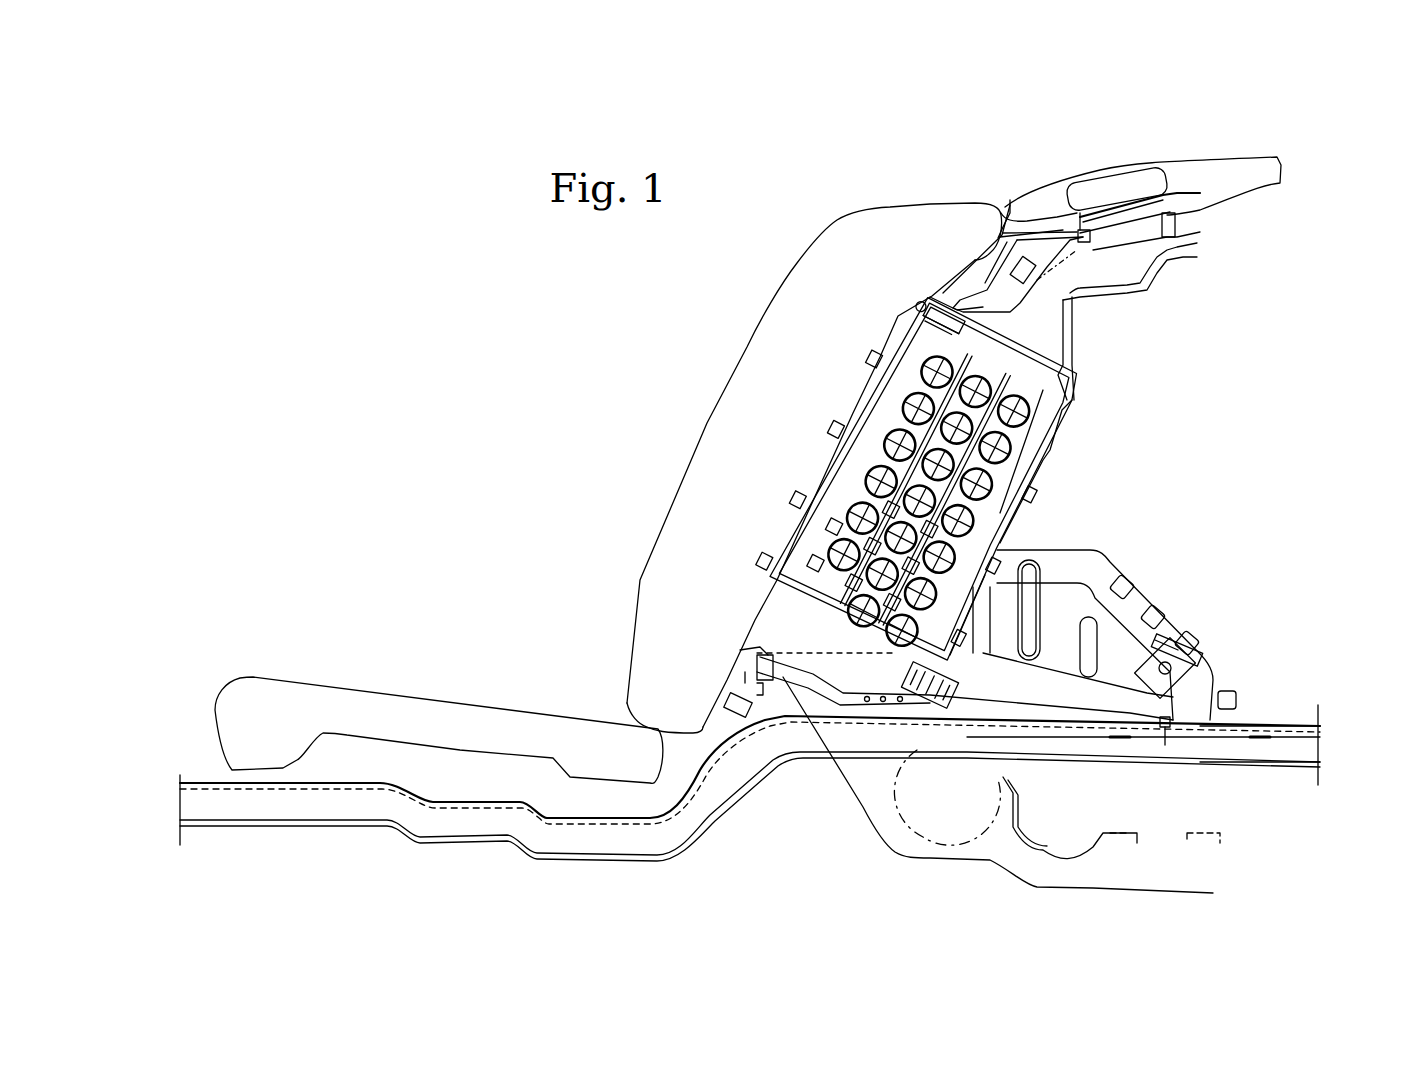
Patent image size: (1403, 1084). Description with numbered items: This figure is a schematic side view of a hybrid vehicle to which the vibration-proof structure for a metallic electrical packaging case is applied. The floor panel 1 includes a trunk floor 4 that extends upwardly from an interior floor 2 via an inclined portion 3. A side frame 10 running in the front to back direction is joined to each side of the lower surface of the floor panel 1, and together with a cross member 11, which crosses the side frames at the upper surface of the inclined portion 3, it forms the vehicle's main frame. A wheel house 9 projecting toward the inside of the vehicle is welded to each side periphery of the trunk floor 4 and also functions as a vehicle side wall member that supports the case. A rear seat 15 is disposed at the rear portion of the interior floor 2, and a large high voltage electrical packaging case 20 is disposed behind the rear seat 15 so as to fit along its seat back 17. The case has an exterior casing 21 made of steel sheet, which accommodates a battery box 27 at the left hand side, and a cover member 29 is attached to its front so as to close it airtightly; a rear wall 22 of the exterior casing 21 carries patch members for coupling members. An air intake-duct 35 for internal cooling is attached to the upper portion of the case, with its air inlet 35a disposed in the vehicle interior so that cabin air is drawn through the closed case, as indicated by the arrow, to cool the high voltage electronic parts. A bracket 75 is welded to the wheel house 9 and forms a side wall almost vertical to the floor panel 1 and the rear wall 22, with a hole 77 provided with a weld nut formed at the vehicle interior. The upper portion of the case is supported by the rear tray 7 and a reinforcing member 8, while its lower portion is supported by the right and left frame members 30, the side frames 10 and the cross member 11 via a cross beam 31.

The floor panel 1 is at (447, 800).
The interior floor 2 is at (217, 782).
The inclined portion 3 is at (683, 780).
The trunk floor 4 is at (1287, 720).
The rear tray 7 is at (980, 260).
The reinforcing member 8 is at (1008, 205).
The wheel house 9 is at (1107, 557).
The side frame 10 is at (1300, 767).
The cross member 11 is at (800, 677).
The rear seat 15 is at (500, 683).
The seat back 17 is at (703, 420).
The high voltage electrical packaging case 20 is at (1083, 411).
The exterior casing 21 is at (1047, 465).
The rear wall 22 is at (1013, 530).
The battery box 27 is at (1027, 495).
The cover member 29 is at (760, 647).
The frame member 30 is at (1020, 722).
The cross beam 31 is at (973, 722).
The air intake-duct 35 is at (1197, 257).
The air inlet 35a is at (1177, 228).
The bracket 75 is at (1197, 647).
The hole 77 is at (1170, 629).